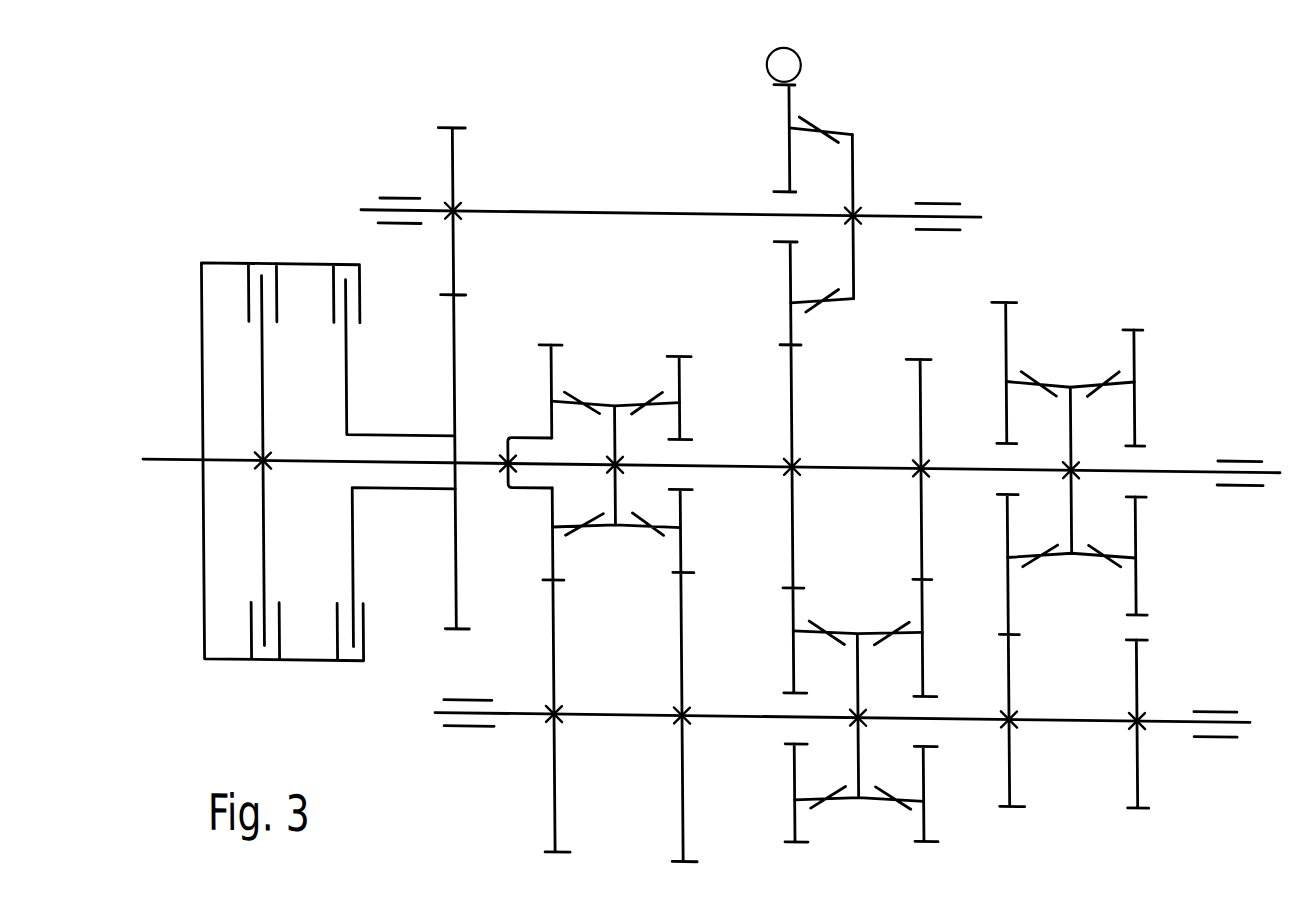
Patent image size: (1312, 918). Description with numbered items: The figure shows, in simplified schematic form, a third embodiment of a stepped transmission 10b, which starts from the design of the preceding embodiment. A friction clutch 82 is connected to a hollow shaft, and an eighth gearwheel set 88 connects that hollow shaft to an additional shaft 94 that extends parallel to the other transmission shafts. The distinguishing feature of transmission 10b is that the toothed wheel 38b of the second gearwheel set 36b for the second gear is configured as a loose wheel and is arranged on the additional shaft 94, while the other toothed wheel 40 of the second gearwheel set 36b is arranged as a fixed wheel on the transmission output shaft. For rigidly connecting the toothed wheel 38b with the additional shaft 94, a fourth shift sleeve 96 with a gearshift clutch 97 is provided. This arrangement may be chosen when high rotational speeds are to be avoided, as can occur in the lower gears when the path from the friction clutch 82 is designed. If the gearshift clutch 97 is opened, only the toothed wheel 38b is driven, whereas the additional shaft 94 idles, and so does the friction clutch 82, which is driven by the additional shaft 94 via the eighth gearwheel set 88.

The stepped transmission 10b is at (1081, 187).
The second gearwheel set 36b is at (768, 164).
The toothed wheel 38b is at (790, 280).
The toothed wheel 40 is at (793, 391).
The friction clutch 82 is at (352, 554).
The eighth gearwheel set 88 is at (453, 128).
The additional shaft 94 is at (670, 215).
The fourth shift sleeve 96 is at (855, 172).
The gearshift clutch 97 is at (823, 133).